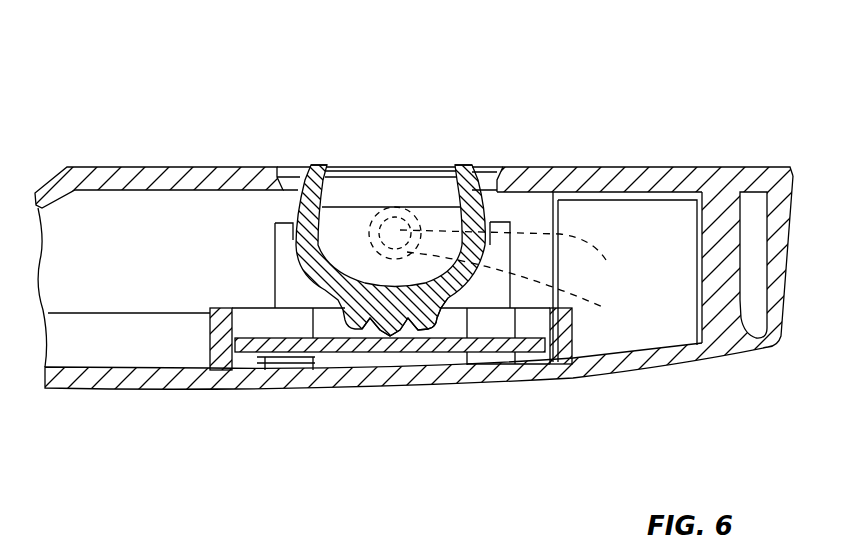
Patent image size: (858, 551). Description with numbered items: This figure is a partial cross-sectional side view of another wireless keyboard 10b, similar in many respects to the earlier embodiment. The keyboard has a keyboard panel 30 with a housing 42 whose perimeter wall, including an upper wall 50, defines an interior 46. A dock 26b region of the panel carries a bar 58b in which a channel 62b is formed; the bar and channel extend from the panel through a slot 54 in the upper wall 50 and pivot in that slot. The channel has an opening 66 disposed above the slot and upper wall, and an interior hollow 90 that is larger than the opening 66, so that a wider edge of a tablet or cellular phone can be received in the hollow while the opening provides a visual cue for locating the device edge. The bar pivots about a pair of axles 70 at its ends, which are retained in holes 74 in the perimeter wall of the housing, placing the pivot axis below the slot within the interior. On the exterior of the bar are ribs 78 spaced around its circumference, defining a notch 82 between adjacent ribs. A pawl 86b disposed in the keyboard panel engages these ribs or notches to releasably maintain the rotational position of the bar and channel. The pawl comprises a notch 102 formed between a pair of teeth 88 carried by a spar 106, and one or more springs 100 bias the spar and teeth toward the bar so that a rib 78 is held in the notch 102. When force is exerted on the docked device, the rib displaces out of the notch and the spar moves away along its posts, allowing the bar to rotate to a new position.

The wireless keyboard 10b is at (97, 140).
The dock 26b is at (514, 130).
The keyboard panel 30 is at (787, 264).
The housing 42 is at (638, 376).
The interior 46 is at (158, 327).
The upper wall 50 is at (657, 185).
The slot 54 is at (503, 169).
The bar 58b is at (298, 190).
The channel 62b is at (385, 180).
The opening 66 is at (412, 157).
The axles 70 is at (533, 277).
The holes 74 is at (513, 296).
The rib 78 is at (427, 318).
The notch 82 is at (410, 327).
The pawl 86b is at (233, 345).
The teeth 88 is at (372, 326).
The interior hollow 90 is at (320, 238).
The springs 100 is at (285, 362).
The notch 102 is at (393, 338).
The spar 106 is at (257, 340).